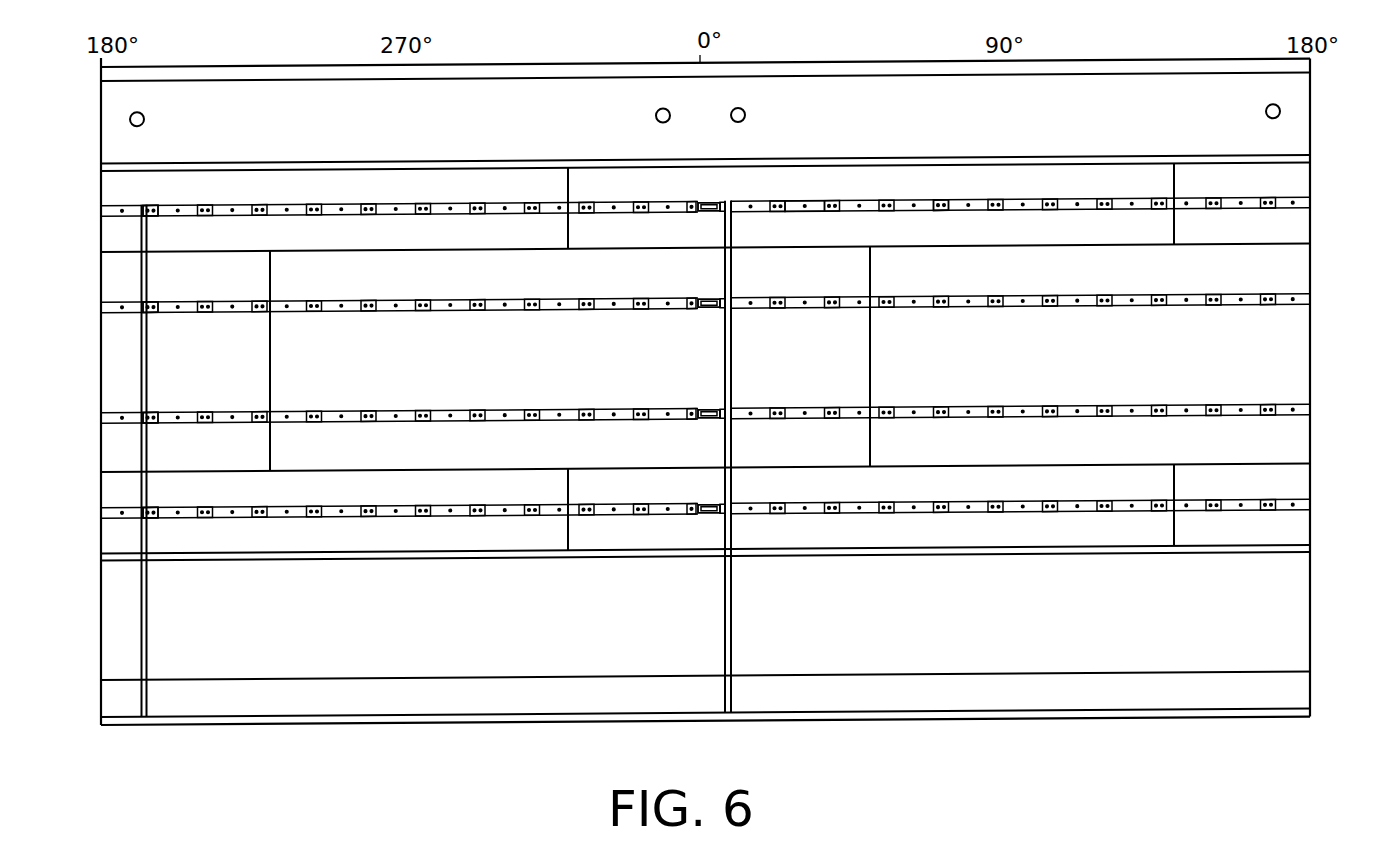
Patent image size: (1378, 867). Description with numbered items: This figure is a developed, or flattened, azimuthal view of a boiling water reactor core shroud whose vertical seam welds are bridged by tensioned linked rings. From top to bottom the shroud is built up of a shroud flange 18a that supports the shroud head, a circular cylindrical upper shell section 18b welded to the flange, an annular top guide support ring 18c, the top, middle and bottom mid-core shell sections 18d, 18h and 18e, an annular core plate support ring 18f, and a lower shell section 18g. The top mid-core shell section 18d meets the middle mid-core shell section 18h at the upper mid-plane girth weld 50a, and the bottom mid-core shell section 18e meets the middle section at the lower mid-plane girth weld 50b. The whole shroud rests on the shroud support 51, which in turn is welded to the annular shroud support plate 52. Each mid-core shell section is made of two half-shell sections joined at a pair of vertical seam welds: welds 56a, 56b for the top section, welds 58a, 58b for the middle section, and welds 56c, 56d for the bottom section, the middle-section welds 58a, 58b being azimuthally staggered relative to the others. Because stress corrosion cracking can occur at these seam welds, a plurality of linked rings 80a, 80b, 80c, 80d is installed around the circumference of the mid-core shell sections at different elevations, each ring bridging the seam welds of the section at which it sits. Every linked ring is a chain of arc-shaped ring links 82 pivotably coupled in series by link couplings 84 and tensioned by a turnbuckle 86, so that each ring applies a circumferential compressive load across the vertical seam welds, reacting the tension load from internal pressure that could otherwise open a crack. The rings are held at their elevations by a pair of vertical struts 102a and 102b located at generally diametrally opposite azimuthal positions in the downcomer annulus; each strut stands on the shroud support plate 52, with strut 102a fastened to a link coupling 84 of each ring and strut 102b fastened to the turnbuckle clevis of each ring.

The shroud flange 18a is at (1190, 62).
The upper shell section 18b is at (1297, 96).
The top guide support ring 18c is at (1297, 158).
The top mid-core shell section 18d is at (1297, 180).
The bottom mid-core shell section 18e is at (1297, 484).
The core plate support ring 18f is at (1297, 548).
The lower shell section 18g is at (1297, 603).
The middle mid-core shell section 18h is at (1297, 352).
The upper mid-plane girth weld 50a is at (1000, 252).
The lower mid-plane girth weld 50b is at (966, 468).
The shroud support 51 is at (1297, 690).
The shroud support plate 52 is at (1268, 718).
The vertical seam weld 56a is at (571, 182).
The vertical seam weld 56b is at (1177, 178).
The vertical seam weld 56c is at (571, 485).
The vertical seam weld 56d is at (1177, 483).
The vertical seam weld 58a is at (272, 352).
The vertical seam weld 58b is at (872, 352).
The linked ring 80a is at (394, 176).
The linked ring 80b is at (394, 274).
The linked ring 80c is at (395, 385).
The linked ring 80d is at (395, 478).
The ring link 82 is at (793, 204).
The link coupling 84 is at (148, 206).
The turnbuckle 86 is at (712, 204).
The vertical strut 102a is at (148, 618).
The vertical strut 102b is at (731, 646).